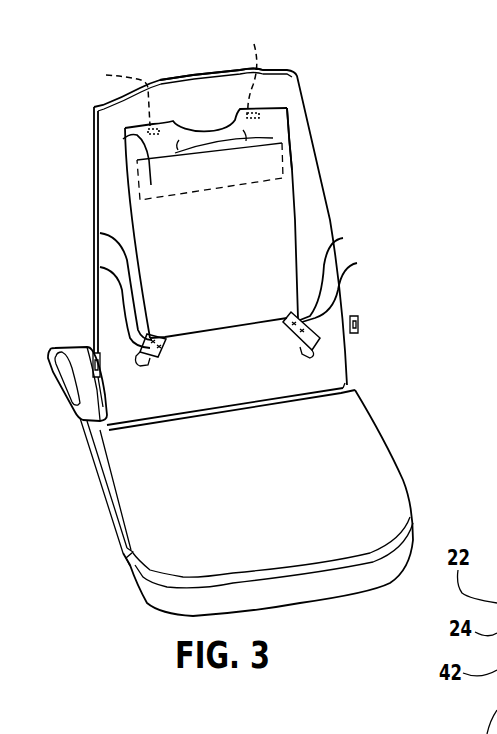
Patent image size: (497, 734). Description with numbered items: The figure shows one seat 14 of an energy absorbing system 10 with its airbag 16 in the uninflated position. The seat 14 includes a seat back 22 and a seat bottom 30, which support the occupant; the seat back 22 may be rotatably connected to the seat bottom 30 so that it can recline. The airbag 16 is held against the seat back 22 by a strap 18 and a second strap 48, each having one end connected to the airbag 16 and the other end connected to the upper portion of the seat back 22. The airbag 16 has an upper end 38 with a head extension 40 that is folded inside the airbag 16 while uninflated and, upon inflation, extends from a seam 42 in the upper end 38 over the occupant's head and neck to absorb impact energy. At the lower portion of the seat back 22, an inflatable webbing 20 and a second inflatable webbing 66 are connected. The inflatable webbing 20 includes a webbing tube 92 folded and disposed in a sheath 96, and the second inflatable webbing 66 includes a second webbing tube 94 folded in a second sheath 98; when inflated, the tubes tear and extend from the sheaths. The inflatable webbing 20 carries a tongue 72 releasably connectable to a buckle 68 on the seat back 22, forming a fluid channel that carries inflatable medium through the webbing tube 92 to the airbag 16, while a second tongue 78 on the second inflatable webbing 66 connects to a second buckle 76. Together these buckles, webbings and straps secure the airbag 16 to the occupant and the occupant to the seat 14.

The energy absorbing system 10 is at (364, 186).
The seat 14 is at (288, 70).
The airbag 16 is at (232, 263).
The strap 18 is at (114, 94).
The inflatable webbing 20 is at (100, 267).
The seat back 22 is at (189, 76).
The seat bottom 30 is at (276, 516).
The upper end 38 is at (278, 126).
The head extension 40 is at (222, 187).
The seam 42 is at (123, 139).
The second strap 48 is at (252, 67).
The second inflatable webbing 66 is at (357, 263).
The buckle 68 is at (93, 350).
The tongue 72 is at (143, 366).
The second buckle 76 is at (360, 321).
The second tongue 78 is at (308, 353).
The webbing tube 92 is at (166, 347).
The second webbing tube 94 is at (285, 336).
The sheath 96 is at (100, 233).
The second sheath 98 is at (343, 238).